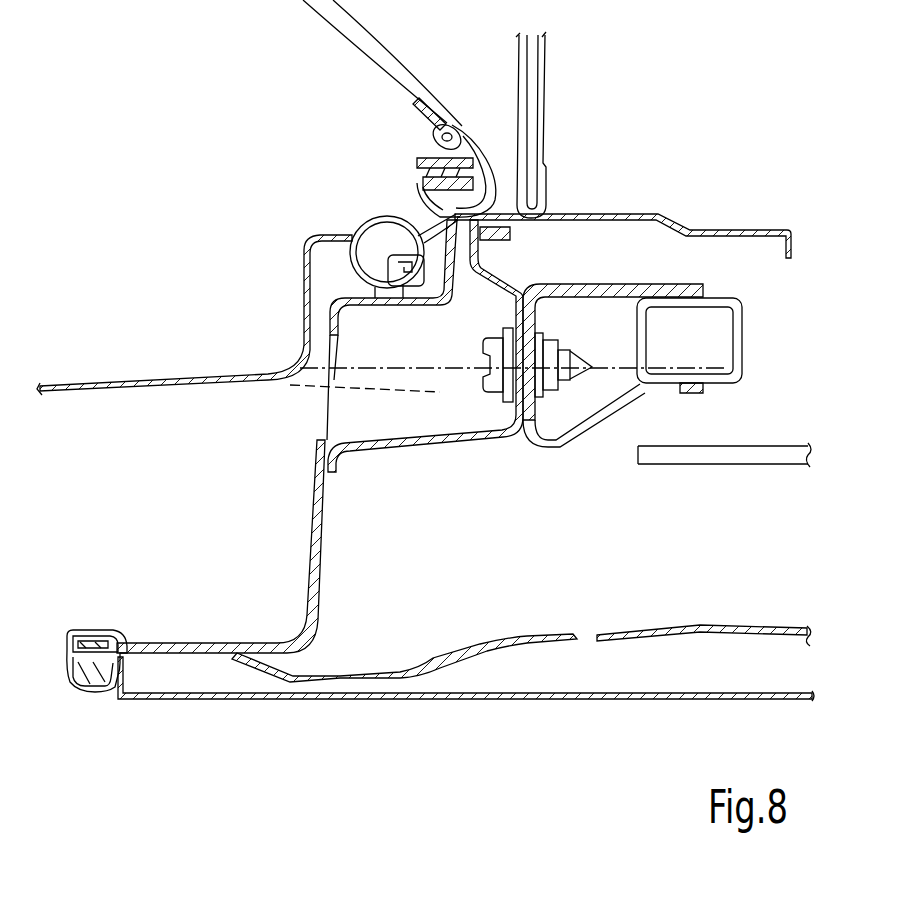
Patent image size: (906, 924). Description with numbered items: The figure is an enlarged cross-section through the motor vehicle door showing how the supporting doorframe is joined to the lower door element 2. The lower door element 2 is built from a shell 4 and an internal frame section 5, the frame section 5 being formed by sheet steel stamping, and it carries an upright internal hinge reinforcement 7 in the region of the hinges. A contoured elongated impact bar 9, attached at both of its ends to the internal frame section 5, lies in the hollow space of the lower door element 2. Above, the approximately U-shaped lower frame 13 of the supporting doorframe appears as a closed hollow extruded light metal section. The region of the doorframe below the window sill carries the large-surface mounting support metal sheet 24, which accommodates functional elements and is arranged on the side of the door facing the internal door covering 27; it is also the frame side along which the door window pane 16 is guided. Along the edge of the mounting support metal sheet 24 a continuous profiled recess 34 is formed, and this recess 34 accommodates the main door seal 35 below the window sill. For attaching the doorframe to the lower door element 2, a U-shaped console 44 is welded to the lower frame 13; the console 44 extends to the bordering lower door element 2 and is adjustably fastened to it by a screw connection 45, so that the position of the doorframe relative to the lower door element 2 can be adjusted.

The lower door element 2 is at (328, 706).
The shell 4 is at (655, 700).
The internal frame section 5 is at (278, 640).
The internal hinge reinforcement 7 is at (415, 452).
The impact bar 9 is at (703, 621).
The lower frame 13 is at (742, 338).
The door window pane 16 is at (736, 455).
The mounting support metal sheet 24 is at (660, 212).
The internal door covering 27 is at (547, 68).
The profiled recess 34 is at (415, 270).
The main door seal 35 is at (355, 211).
The U-shaped console 44 is at (581, 430).
The screw connection 45 is at (484, 390).